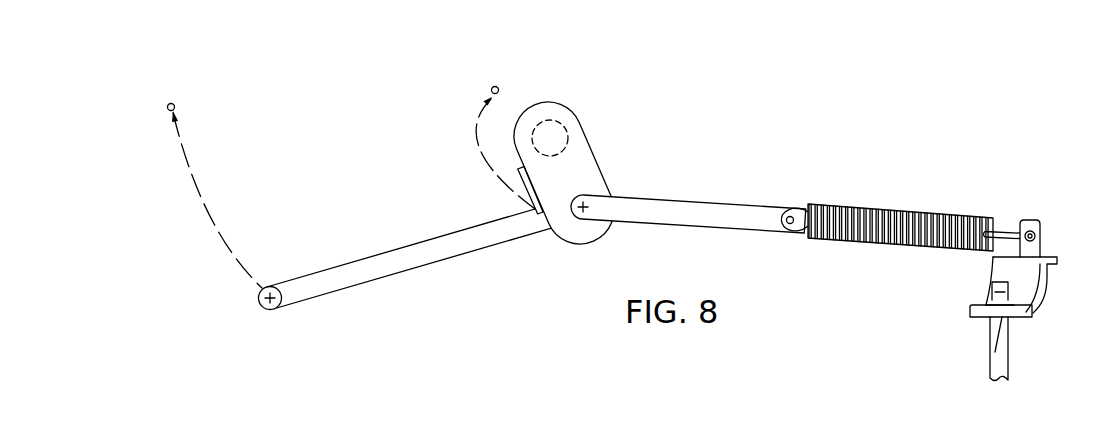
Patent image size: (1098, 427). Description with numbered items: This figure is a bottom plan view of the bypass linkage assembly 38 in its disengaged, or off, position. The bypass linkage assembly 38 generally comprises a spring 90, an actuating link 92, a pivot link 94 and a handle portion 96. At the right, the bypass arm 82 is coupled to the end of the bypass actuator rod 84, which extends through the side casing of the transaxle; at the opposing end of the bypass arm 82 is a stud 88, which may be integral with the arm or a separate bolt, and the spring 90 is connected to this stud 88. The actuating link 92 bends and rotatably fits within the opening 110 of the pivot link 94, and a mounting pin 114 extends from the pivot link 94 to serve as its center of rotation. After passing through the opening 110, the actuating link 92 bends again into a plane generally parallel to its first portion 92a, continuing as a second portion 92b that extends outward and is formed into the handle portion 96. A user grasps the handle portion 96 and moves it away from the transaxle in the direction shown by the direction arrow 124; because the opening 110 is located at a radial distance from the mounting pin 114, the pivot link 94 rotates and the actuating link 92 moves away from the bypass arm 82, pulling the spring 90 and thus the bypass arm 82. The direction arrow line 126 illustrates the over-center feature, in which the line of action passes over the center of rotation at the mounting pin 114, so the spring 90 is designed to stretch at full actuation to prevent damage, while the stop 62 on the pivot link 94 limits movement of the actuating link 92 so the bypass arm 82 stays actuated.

The bypass linkage assembly 38 is at (360, 86).
The direction arrow 124 is at (210, 218).
The direction arrow line 126 is at (477, 136).
The pivot link 94 is at (565, 103).
The mounting pin 114 is at (569, 126).
The opening 110 is at (586, 204).
The actuating link 92 is at (688, 192).
The first portion of actuating link 92a is at (737, 200).
The second portion of actuating link 92b is at (365, 258).
The handle portion 96 is at (263, 306).
The stop 62 is at (523, 192).
The spring 90 is at (887, 207).
The stud 88 is at (1031, 220).
The bypass arm 82 is at (1035, 287).
The bypass actuator rod 84 is at (1010, 362).